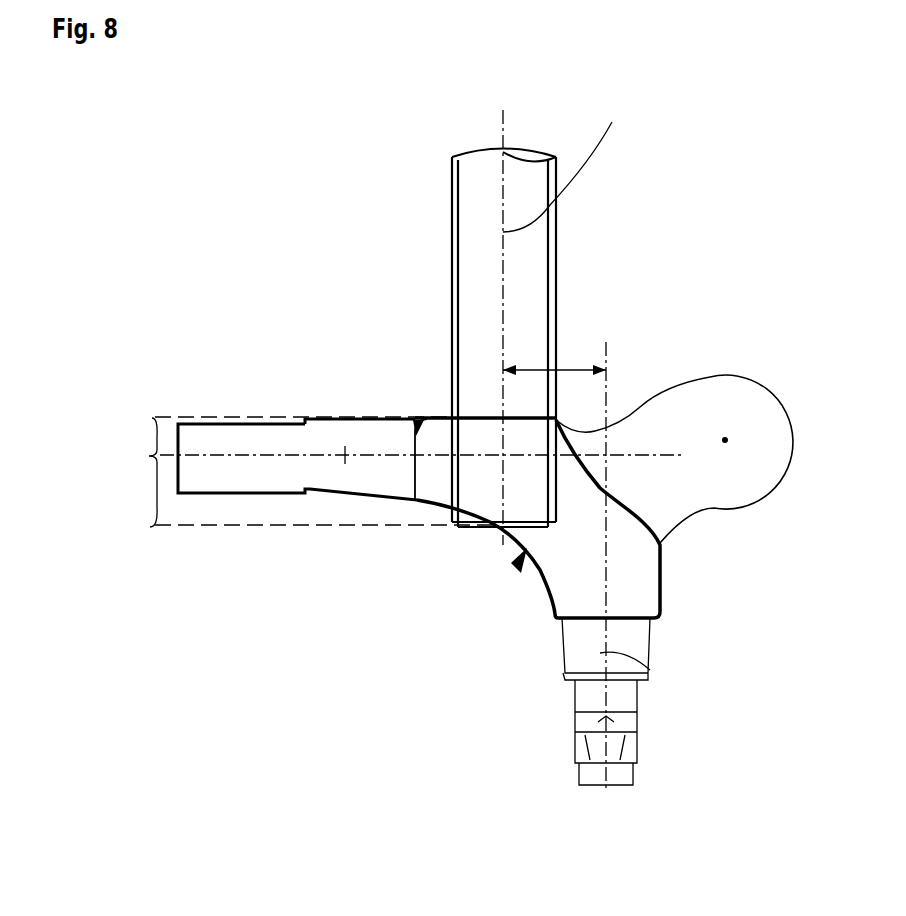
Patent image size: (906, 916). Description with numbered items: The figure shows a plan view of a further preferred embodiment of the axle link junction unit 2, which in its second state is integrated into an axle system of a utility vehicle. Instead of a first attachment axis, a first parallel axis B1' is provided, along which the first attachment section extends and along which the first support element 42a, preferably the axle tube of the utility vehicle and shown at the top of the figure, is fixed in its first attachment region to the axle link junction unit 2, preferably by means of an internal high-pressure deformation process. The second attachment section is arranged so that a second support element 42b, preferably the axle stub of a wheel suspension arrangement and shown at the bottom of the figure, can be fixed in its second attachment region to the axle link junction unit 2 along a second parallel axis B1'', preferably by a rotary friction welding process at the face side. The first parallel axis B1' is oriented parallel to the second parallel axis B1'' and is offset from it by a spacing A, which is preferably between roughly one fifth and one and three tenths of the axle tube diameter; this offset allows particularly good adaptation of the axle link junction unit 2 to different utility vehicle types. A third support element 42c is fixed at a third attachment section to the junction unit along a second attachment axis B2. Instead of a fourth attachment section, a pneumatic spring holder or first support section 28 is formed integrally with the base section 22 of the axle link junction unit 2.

The axle link junction unit 2 is at (517, 563).
The base section 22 is at (620, 562).
The first support section 28 is at (712, 410).
The first support element 42a is at (475, 285).
The second support element 42b is at (572, 657).
The third support element 42c is at (277, 440).
The spacing A is at (565, 367).
The first parallel axis B1' is at (572, 155).
The second parallel axis B1'' is at (670, 700).
The second attachment axis B2 is at (345, 453).